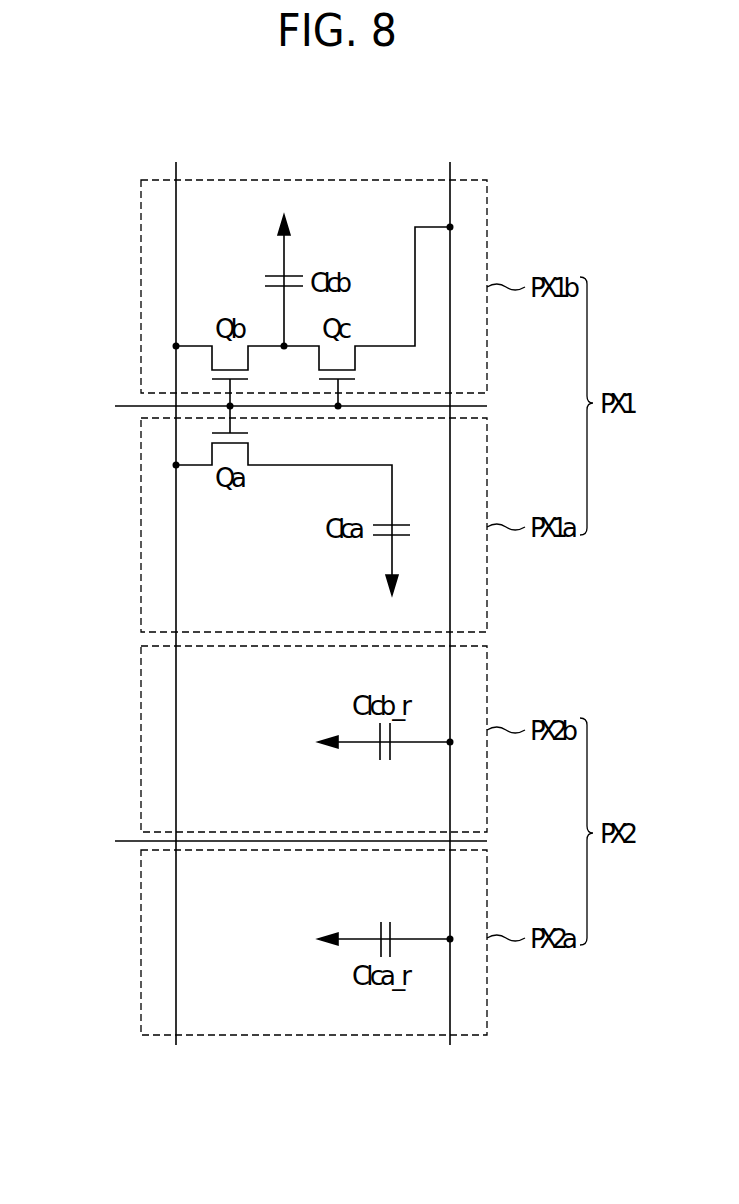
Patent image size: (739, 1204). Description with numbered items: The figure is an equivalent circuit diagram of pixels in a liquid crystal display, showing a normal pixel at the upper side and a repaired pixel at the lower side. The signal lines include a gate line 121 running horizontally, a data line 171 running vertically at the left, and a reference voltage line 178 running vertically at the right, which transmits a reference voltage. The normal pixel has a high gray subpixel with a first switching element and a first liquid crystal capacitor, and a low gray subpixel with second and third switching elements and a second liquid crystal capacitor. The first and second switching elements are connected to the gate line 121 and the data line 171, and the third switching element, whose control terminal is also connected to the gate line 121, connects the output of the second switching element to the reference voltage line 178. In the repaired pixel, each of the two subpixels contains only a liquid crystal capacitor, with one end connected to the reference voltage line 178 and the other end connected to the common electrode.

The data line 171 is at (176, 205).
The reference voltage line 178 is at (450, 205).
The gate line 121 is at (125, 406).